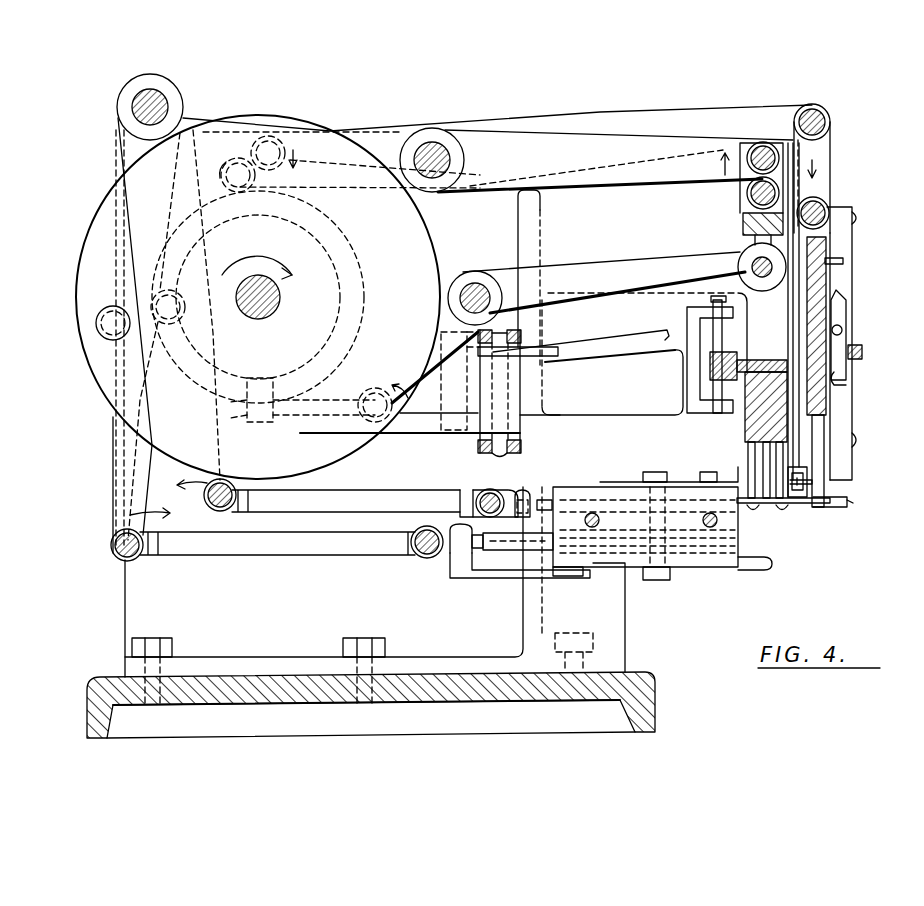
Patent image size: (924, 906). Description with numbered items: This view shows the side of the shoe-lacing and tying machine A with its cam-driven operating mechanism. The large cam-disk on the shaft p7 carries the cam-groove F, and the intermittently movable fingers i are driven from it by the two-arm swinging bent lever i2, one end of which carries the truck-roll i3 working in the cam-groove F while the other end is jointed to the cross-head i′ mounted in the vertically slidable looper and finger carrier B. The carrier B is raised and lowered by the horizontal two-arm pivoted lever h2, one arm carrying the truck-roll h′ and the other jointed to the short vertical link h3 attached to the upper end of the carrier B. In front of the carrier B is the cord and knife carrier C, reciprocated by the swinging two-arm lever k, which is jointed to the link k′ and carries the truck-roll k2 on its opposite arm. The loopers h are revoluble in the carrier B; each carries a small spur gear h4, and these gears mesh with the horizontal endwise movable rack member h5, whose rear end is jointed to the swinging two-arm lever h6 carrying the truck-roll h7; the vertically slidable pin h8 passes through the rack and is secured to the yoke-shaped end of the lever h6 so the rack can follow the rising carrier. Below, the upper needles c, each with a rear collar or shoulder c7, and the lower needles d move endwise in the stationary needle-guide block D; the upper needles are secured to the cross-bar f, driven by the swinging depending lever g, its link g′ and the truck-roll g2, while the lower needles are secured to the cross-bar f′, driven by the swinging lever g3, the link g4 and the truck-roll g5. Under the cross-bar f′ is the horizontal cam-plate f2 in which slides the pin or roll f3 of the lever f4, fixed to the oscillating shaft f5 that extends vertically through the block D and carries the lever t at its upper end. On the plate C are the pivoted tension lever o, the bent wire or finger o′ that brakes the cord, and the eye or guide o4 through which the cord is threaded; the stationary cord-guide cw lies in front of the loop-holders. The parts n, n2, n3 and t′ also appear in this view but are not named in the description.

The machine A is at (417, 395).
The cam-groove F is at (88, 228).
The shaft p7 is at (281, 299).
The swinging two-arm lever k is at (675, 125).
The truck-roll k2 is at (235, 160).
The truck-roll h′ is at (266, 138).
The two-arm pivoted lever h2 is at (293, 150).
The link k′ is at (830, 152).
The vertical link h3 is at (763, 179).
The looper and finger carrier B is at (743, 224).
The cross-head i′ is at (745, 256).
The bent lever i2 is at (573, 303).
The truck-roll i3 is at (370, 396).
The truck-roll h7 is at (262, 378).
The guide n3 is at (276, 378).
The rod n2 is at (650, 338).
The two-arm lever h6 is at (605, 372).
The rack member h5 is at (740, 366).
The vertically slidable pin h8 is at (720, 396).
The spur gear h4 is at (756, 352).
The fingers i is at (778, 345).
The eye or guide o4 is at (845, 264).
The cord and knife carrier C is at (816, 292).
The tension lever o is at (846, 324).
The bent wire or finger o′ is at (846, 380).
The rod n is at (822, 430).
The loopers h is at (745, 486).
The stationary cord-guide cw is at (792, 505).
The truck-roll g5 is at (98, 323).
The truck-roll g2 is at (150, 328).
The swinging lever g3 is at (113, 438).
The swinging depending lever g is at (197, 450).
The link g′ is at (362, 495).
The link g4 is at (290, 555).
The cross-bar f is at (500, 488).
The collar or shoulder c7 is at (526, 490).
The upper needles c is at (600, 486).
The needle-guide block D is at (605, 525).
The lever t is at (690, 486).
The valve t′ is at (700, 490).
The oscillating shaft f5 is at (648, 476).
The cross-bar f′ is at (462, 542).
The cam-plate f2 is at (492, 580).
The pin or roll f3 is at (565, 580).
The lower needles d is at (622, 590).
The lever f4 is at (645, 580).